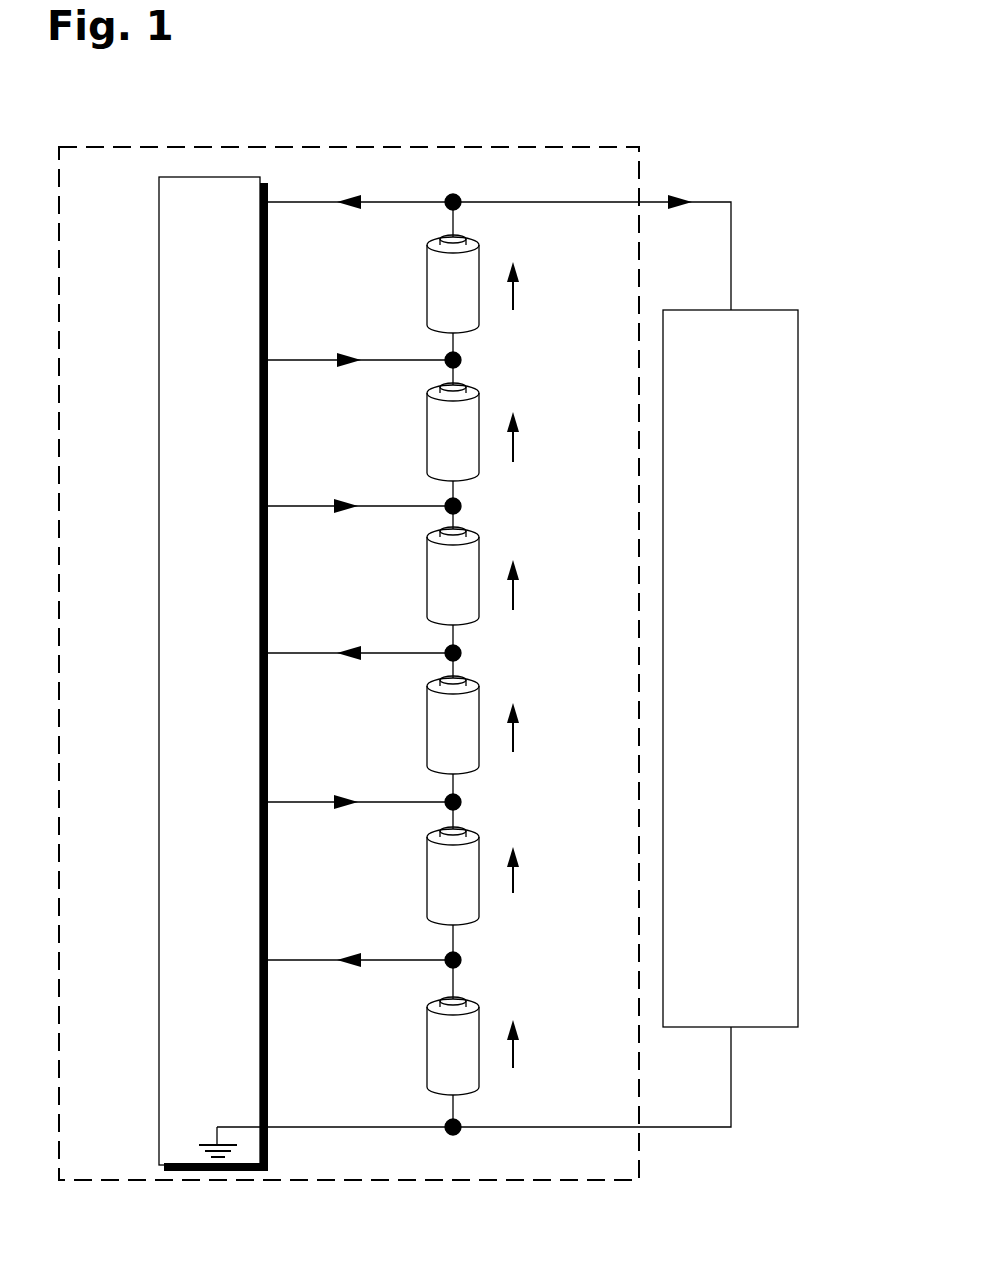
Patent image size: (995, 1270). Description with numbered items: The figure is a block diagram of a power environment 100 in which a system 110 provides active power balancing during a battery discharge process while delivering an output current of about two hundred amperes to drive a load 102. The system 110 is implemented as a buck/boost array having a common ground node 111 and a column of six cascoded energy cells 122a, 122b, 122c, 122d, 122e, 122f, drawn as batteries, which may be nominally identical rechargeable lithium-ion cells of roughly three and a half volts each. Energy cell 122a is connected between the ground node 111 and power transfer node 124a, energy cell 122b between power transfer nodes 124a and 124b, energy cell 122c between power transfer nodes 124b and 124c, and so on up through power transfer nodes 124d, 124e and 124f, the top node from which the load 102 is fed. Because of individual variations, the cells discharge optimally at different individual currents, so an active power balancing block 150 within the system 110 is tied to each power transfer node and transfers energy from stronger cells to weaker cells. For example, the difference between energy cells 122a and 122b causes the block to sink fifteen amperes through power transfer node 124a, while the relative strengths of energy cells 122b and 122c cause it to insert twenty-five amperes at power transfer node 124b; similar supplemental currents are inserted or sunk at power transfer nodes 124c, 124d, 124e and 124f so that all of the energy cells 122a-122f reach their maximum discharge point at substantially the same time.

The power environment 100 is at (740, 55).
The system 110 is at (424, 146).
The active power balancing block 150 is at (158, 300).
The load 102 is at (798, 668).
The common ground node 111 is at (461, 1131).
The energy cell 122a is at (427, 1041).
The energy cell 122b is at (427, 871).
The energy cell 122c is at (427, 724).
The energy cell 122d is at (427, 564).
The energy cell 122e is at (427, 421).
The energy cell 122f is at (427, 273).
The power transfer node 124a is at (461, 962).
The power transfer node 124b is at (461, 804).
The power transfer node 124c is at (461, 655).
The power transfer node 124d is at (461, 508).
The power transfer node 124e is at (461, 362).
The power transfer node 124f is at (460, 207).